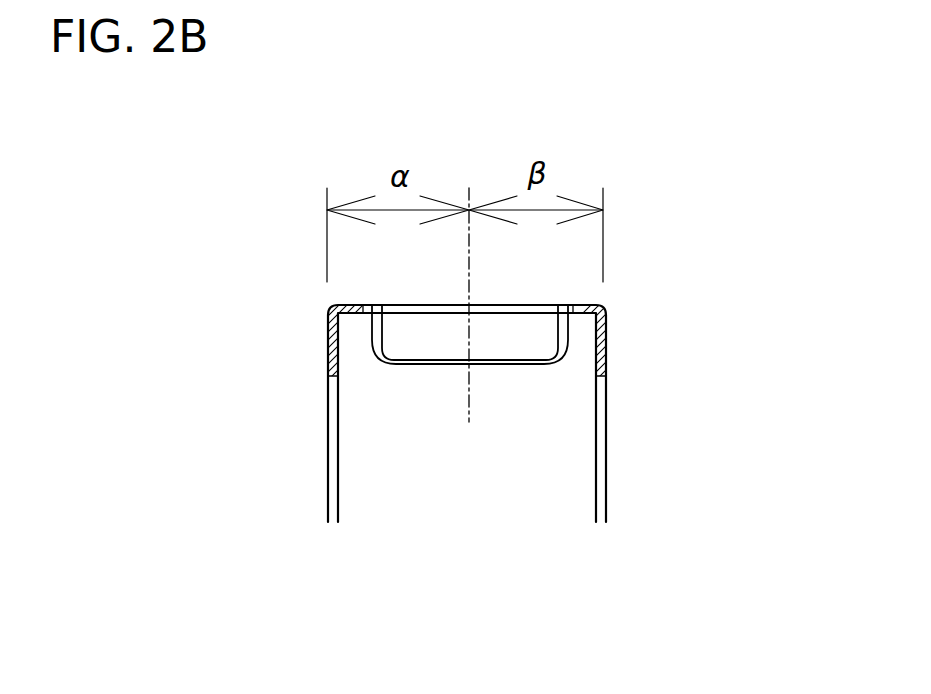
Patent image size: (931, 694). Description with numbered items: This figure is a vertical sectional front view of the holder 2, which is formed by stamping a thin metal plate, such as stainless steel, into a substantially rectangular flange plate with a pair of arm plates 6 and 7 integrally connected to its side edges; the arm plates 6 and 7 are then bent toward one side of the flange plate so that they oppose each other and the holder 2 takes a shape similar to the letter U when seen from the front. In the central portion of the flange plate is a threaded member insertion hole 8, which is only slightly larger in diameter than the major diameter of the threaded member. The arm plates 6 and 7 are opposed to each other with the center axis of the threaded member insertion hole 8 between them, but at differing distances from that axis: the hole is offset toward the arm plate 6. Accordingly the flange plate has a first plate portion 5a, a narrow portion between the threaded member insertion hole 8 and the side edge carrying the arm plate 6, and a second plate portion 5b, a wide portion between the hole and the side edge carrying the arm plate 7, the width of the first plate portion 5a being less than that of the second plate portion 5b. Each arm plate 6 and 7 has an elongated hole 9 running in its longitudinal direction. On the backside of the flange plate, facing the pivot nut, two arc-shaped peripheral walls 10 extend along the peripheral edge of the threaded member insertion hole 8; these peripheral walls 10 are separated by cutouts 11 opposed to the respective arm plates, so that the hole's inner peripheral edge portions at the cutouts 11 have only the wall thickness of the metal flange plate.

The holder 2 is at (292, 333).
The first plate portion 5a is at (588, 303).
The second plate portion 5b is at (337, 305).
The arm plate 6 is at (606, 355).
The arm plate 7 is at (327, 356).
The threaded member insertion hole 8 is at (422, 323).
The elongated hole 9 is at (327, 442).
The arc-shaped peripheral wall 10 is at (515, 341).
The cutout 11 is at (388, 308).